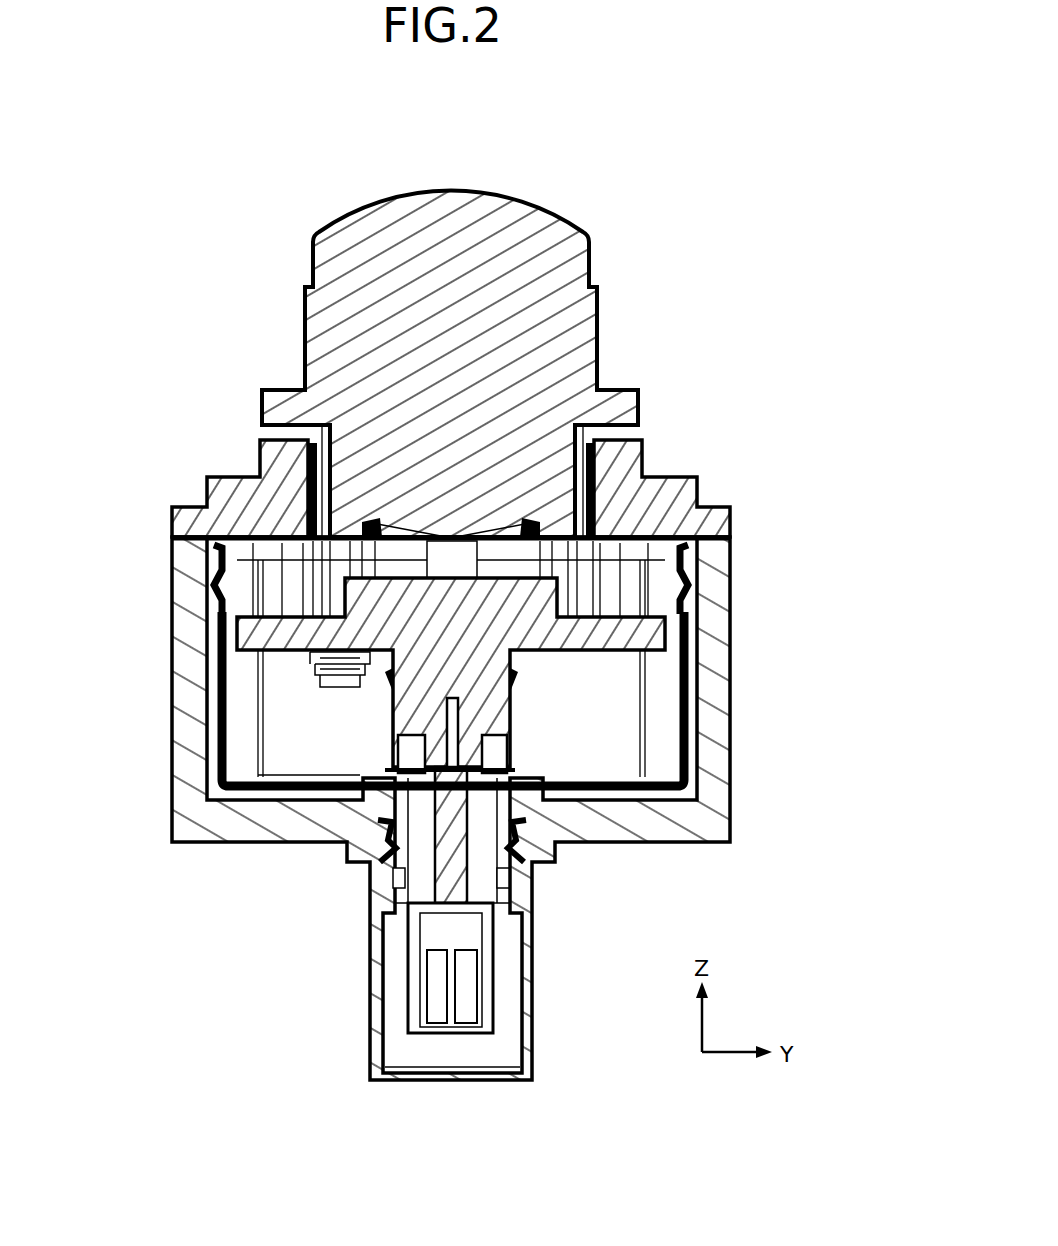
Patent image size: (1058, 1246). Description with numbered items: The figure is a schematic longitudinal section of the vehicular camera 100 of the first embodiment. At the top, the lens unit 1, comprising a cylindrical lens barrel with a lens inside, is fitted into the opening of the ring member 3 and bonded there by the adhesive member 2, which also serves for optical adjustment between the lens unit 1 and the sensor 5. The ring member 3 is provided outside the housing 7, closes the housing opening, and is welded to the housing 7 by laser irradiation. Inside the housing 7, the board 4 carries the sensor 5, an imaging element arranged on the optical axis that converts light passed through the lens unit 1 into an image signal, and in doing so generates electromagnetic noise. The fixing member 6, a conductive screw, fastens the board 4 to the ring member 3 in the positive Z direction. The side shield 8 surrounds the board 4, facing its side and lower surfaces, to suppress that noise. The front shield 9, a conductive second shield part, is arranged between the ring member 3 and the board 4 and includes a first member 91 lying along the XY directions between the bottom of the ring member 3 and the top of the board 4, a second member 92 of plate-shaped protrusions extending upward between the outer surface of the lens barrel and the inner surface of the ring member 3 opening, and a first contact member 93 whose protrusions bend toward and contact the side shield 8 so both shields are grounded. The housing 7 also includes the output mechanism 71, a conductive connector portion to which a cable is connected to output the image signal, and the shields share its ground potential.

The vehicular camera 100 is at (644, 169).
The lens unit 1 is at (587, 253).
The adhesive member 2 is at (632, 432).
The ring member 3 is at (230, 492).
The board 4 is at (610, 617).
The sensor 5 is at (530, 578).
The fixing member 6 is at (340, 683).
The housing 7 is at (733, 767).
The output mechanism 71 is at (398, 990).
The side shield 8 is at (217, 697).
The front shield 9 is at (477, 525).
The first member 91 is at (735, 507).
The second member 92 is at (600, 467).
The first contact member 93 is at (225, 545).